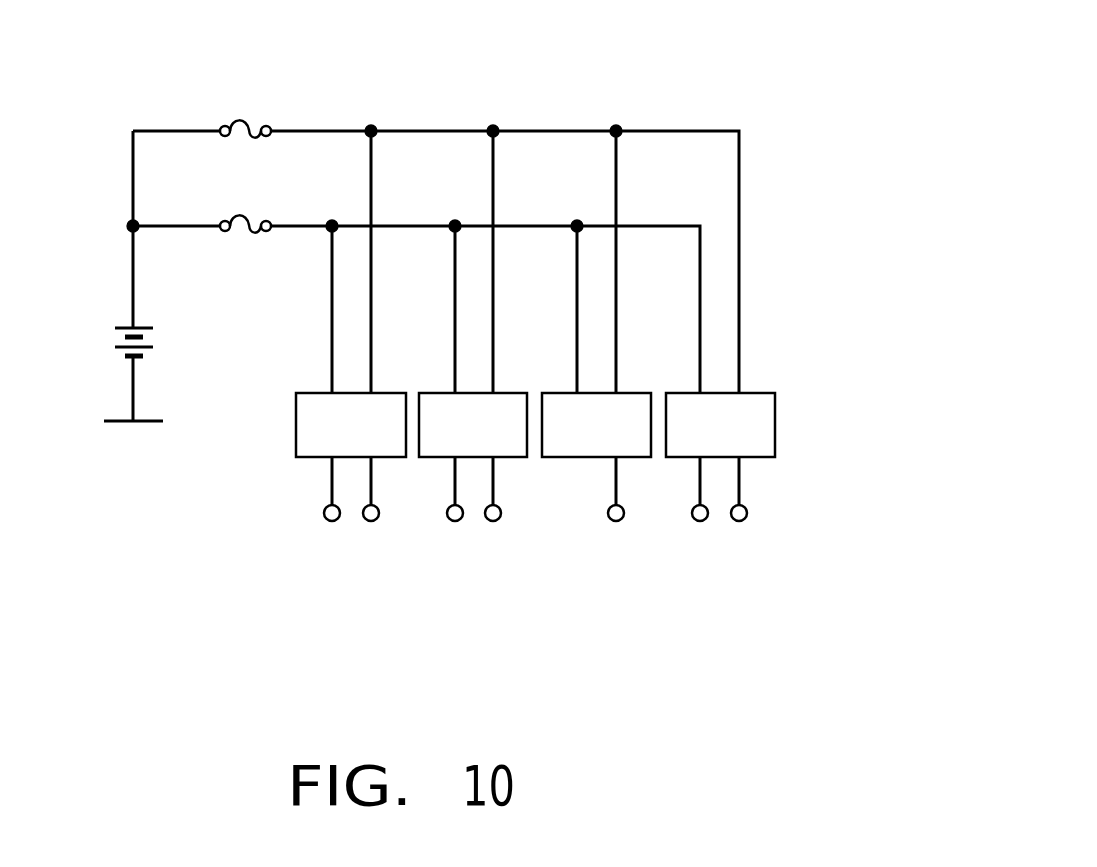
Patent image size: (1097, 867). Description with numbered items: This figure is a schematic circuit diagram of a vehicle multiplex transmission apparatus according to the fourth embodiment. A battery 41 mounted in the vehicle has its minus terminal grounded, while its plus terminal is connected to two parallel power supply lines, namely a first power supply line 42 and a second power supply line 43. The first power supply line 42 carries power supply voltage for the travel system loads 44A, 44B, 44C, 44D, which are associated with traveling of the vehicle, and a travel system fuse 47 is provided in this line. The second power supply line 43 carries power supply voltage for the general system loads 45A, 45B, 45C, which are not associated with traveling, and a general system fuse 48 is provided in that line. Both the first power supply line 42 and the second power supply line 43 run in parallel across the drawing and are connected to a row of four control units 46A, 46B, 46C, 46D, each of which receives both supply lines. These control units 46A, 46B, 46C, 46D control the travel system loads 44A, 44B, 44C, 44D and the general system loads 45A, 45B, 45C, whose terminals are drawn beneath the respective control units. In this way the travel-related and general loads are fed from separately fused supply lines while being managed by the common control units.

The battery 41 is at (104, 342).
The first power supply line 42 is at (331, 131).
The second power supply line 43 is at (405, 224).
The travel system load 44A is at (368, 521).
The travel system load 44B is at (492, 521).
The travel system load 44C is at (613, 521).
The travel system load 44D is at (744, 520).
The general system load 45A is at (325, 519).
The general system load 45B is at (450, 520).
The general system load 45C is at (697, 521).
The control unit 46A is at (296, 402).
The control unit 46B is at (419, 402).
The control unit 46C is at (542, 402).
The control unit 46D is at (666, 402).
The travel system fuse 47 is at (246, 121).
The general system fuse 48 is at (247, 237).